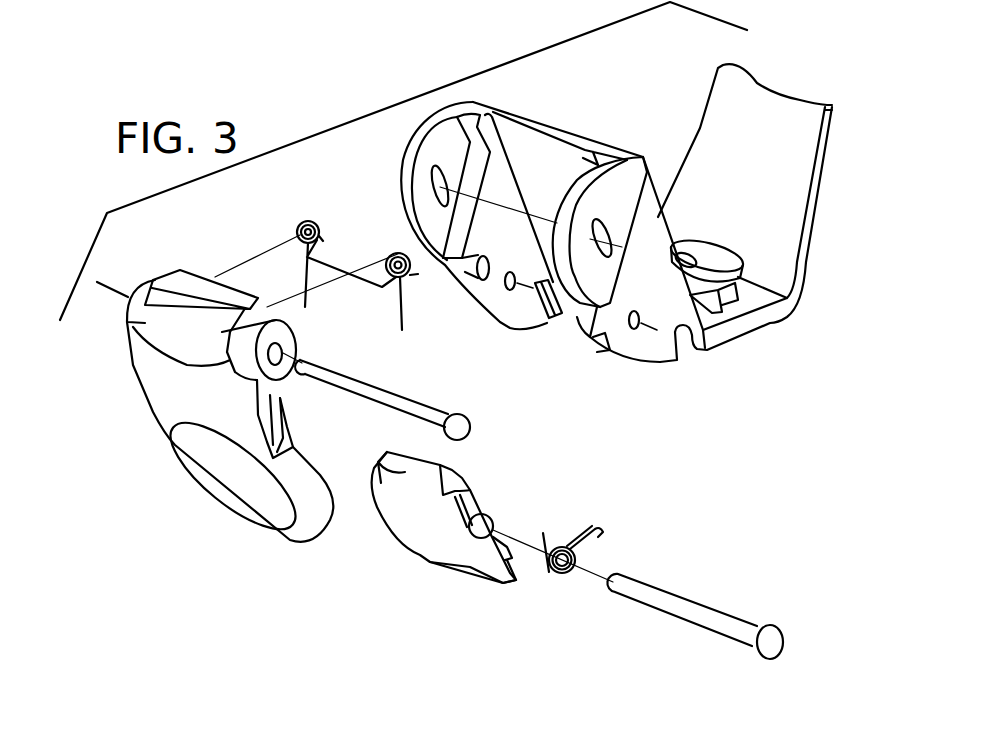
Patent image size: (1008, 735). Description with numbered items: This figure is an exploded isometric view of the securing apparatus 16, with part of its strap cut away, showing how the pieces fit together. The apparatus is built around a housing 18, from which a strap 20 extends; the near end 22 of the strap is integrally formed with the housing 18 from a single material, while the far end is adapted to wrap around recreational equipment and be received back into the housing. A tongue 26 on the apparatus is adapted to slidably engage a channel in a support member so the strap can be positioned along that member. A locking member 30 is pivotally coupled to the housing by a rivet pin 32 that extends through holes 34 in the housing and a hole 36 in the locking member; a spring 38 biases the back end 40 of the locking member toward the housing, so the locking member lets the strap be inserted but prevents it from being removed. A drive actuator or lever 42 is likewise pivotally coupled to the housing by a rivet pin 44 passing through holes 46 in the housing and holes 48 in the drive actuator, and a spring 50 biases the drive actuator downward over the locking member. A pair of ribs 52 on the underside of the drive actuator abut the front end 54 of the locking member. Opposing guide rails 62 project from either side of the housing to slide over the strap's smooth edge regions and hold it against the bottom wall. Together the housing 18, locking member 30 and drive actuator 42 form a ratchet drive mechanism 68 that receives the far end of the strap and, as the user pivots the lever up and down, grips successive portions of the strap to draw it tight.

The securing apparatus 16 is at (779, 200).
The housing 18 is at (524, 250).
The strap 20 is at (782, 98).
The near end 22 is at (780, 150).
The tongue 26 is at (712, 262).
The locking member 30 is at (438, 534).
The rivet pin 32 is at (715, 615).
The holes 34 is at (510, 290).
The hole 36 is at (489, 522).
The spring 38 is at (549, 572).
The back end 40 is at (460, 561).
The drive actuator 42 is at (221, 408).
The rivet pin 44 is at (422, 407).
The holes 46 is at (430, 199).
The holes 48 is at (282, 351).
The spring 50 is at (298, 228).
The ribs 52 is at (284, 408).
The front end 54 is at (385, 455).
The guide rails 62 is at (565, 321).
The ratchet drive mechanism 68 is at (752, 466).